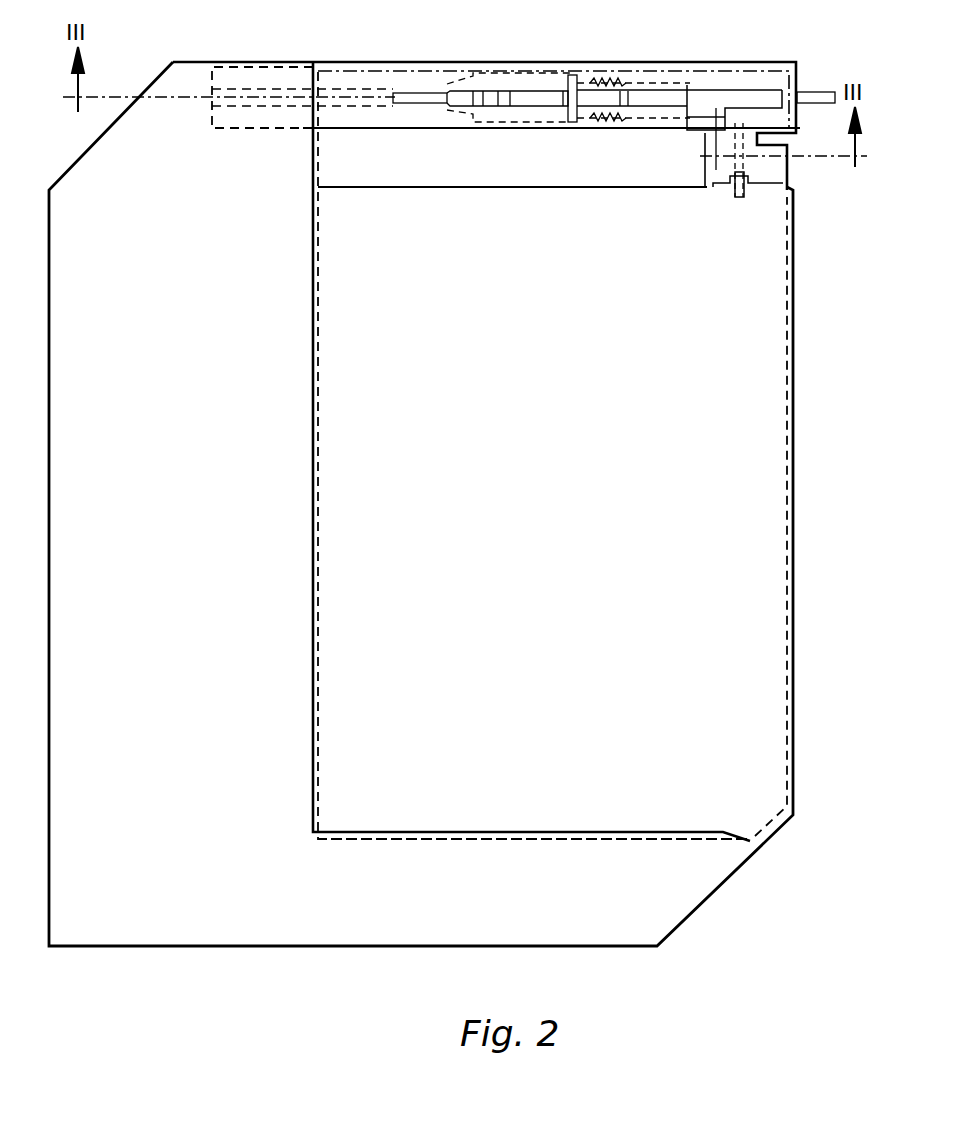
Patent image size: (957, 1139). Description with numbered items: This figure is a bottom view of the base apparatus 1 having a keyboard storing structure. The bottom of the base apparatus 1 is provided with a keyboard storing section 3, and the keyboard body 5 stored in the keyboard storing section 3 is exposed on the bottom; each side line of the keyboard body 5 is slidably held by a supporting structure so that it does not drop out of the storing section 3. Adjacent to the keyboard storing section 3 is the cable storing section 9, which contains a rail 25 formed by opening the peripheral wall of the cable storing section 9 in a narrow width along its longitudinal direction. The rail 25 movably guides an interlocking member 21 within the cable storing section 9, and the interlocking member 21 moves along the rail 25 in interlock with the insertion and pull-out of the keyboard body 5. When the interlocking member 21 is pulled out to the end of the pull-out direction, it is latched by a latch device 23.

The base apparatus 1 is at (311, 946).
The keyboard storing section 3 is at (748, 420).
The keyboard body 5 is at (382, 839).
The cable storing section 9 is at (254, 128).
The interlocking member 21 is at (545, 72).
The latch device 23 is at (773, 173).
The rail 25 is at (353, 97).